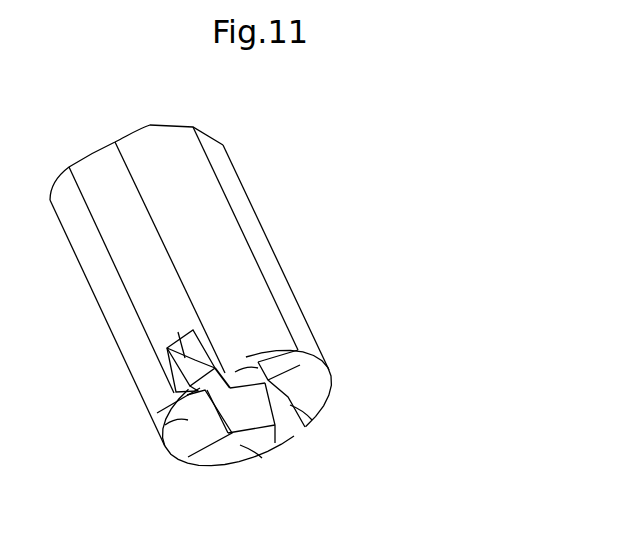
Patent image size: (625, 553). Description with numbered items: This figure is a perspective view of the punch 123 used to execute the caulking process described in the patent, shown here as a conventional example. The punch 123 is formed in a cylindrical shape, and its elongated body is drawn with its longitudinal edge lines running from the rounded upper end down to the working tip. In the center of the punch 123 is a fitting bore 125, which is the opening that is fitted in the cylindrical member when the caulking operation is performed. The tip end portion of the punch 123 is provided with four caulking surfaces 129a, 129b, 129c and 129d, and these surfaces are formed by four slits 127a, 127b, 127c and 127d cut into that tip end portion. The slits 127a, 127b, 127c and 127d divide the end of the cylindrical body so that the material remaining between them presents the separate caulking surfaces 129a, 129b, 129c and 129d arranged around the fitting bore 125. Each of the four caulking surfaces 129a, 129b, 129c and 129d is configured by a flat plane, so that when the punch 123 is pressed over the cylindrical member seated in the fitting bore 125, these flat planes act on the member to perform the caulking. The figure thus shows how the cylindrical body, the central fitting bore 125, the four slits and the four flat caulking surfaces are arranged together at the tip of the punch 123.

The punch 123 is at (272, 234).
The fitting bore 125 is at (165, 349).
The slit 127a is at (305, 352).
The slit 127b is at (270, 428).
The slit 127c is at (180, 440).
The slit 127d is at (165, 365).
The caulking surface 129a is at (300, 407).
The caulking surface 129b is at (240, 443).
The caulking surface 129c is at (156, 413).
The caulking surface 129d is at (250, 378).